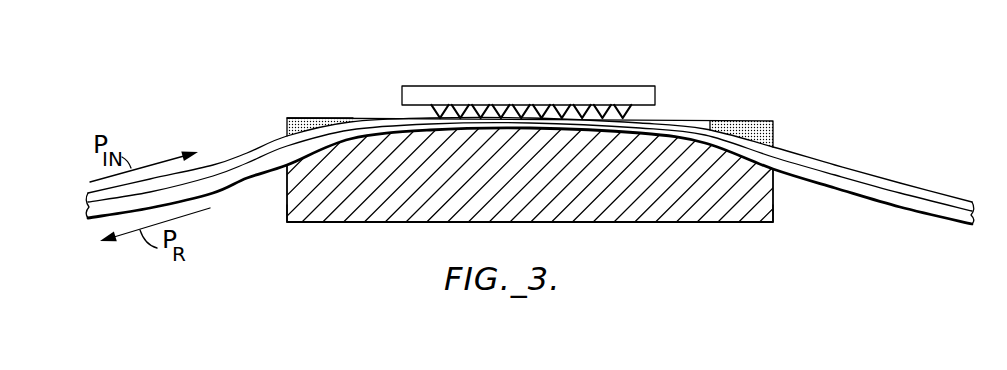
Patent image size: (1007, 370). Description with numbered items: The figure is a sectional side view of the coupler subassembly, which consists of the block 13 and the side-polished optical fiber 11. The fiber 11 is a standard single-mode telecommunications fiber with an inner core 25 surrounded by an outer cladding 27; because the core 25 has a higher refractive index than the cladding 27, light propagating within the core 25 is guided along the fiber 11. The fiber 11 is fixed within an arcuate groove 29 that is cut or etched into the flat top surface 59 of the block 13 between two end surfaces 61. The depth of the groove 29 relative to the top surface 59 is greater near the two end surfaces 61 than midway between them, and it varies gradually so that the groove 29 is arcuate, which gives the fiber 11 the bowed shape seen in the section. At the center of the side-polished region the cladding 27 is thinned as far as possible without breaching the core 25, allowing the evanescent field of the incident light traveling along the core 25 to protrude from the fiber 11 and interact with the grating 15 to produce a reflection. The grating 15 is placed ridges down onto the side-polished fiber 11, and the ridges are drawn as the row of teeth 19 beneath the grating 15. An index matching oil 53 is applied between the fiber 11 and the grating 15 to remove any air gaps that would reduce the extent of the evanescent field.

The fiber 11 is at (530, 170).
The block 13 is at (618, 227).
The grating 15 is at (644, 86).
The teeth 19 is at (519, 81).
The core 25 is at (828, 178).
The cladding 27 is at (790, 150).
The arcuate groove 29 is at (297, 118).
The index matching oil 53 is at (543, 117).
The flat top surface 59 is at (353, 118).
The end surfaces 61 is at (285, 210).